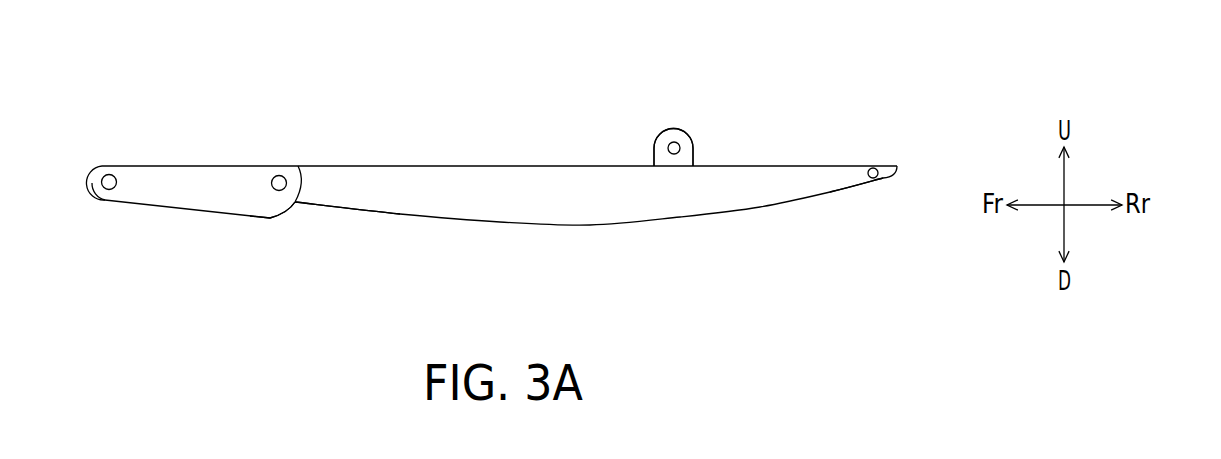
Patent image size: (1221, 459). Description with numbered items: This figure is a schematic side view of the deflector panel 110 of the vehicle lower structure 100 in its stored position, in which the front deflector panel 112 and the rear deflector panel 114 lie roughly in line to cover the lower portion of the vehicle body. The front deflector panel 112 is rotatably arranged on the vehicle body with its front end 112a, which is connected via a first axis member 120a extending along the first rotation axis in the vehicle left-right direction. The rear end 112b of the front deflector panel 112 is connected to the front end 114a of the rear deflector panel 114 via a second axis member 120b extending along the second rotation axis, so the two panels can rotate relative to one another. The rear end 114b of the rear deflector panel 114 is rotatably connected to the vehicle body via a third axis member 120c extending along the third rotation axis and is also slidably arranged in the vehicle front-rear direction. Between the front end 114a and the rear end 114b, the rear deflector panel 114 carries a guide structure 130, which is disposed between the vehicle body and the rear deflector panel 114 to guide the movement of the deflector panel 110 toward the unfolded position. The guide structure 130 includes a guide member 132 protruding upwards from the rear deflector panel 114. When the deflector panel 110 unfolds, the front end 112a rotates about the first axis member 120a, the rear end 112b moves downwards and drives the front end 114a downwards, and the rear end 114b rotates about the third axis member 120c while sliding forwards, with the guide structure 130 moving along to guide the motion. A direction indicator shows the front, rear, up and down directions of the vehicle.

The vehicle lower structure 100 is at (981, 320).
The deflector panel 110 is at (718, 117).
The front deflector panel 112 is at (197, 182).
The front end of front deflector panel 112a is at (102, 203).
The rear end of front deflector panel 112b is at (270, 222).
The rear deflector panel 114 is at (592, 193).
The front end of rear deflector panel 114a is at (305, 212).
The rear end of rear deflector panel 114b is at (872, 189).
The first axis member 120a is at (102, 176).
The second axis member 120b is at (285, 176).
The third axis member 120c is at (873, 167).
The guide structure 130 is at (673, 148).
The guide member 132 is at (662, 137).